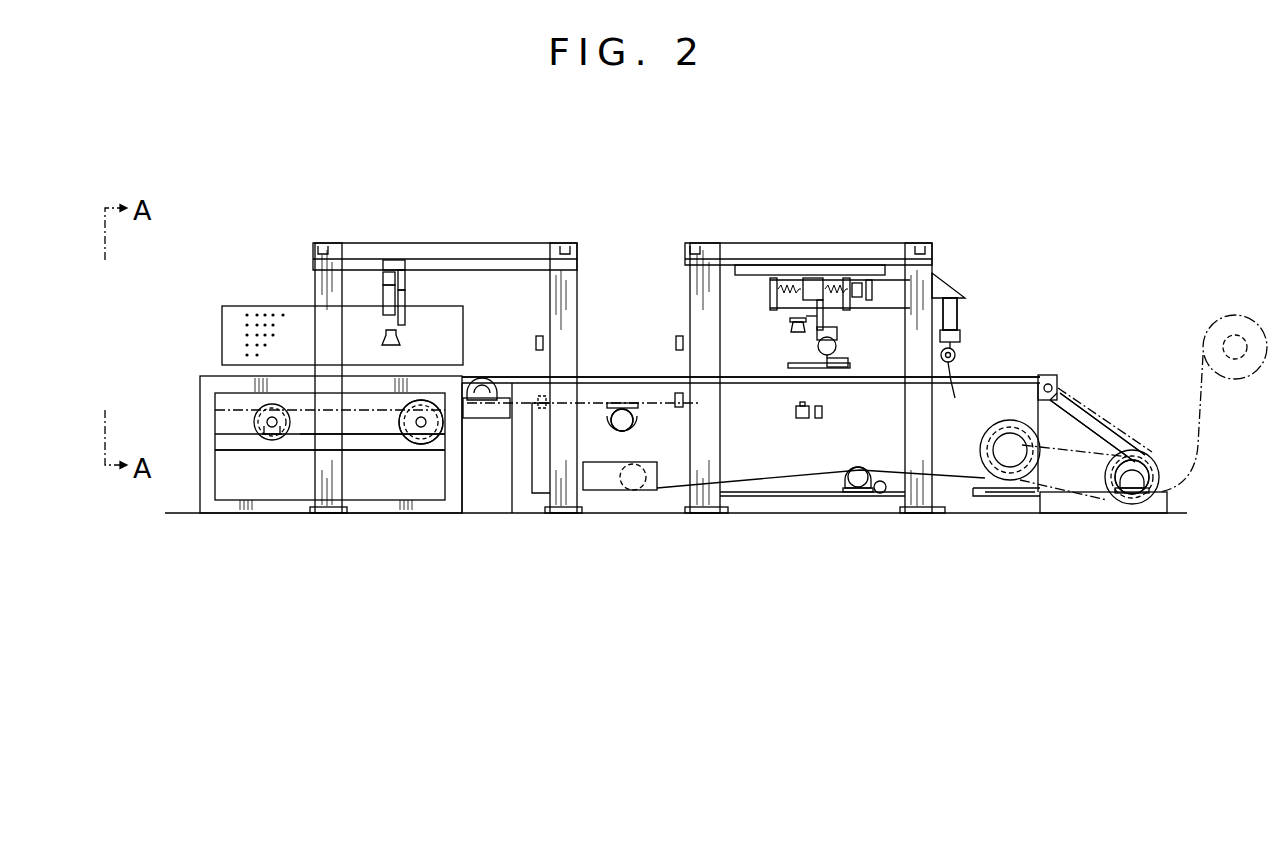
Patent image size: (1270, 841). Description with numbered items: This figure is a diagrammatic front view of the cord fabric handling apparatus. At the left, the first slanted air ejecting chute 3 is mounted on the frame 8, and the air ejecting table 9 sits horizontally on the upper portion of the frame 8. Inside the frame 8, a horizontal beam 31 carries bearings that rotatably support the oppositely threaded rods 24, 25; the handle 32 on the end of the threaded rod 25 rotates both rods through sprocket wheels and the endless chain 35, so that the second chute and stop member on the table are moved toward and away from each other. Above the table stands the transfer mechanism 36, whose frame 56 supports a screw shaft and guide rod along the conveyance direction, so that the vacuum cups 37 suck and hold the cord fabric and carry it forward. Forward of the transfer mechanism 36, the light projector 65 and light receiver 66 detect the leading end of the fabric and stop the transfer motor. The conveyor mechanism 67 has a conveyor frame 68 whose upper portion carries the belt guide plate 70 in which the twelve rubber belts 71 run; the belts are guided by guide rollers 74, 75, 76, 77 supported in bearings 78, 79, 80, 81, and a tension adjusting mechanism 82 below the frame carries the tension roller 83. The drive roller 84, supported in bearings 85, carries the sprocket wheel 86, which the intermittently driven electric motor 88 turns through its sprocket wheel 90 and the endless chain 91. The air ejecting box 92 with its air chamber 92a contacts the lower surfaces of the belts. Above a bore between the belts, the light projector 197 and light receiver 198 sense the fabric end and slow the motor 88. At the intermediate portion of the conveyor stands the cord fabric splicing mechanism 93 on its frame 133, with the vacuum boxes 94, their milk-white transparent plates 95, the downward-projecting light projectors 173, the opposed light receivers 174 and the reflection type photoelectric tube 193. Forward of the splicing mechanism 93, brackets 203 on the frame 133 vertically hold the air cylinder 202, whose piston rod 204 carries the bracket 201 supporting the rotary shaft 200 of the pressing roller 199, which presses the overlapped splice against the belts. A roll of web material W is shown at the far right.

The first slanted air ejecting chute 3 is at (220, 316).
The air ejecting table 9 is at (210, 374).
The frame 8 is at (205, 413).
The threaded rod 24 is at (266, 418).
The threaded rod 25 is at (416, 422).
The horizontal beam 31 is at (249, 444).
The endless chain 35 is at (388, 437).
The handle 32 is at (422, 445).
The frame 56 is at (322, 487).
The transfer mechanism 36 is at (450, 243).
The vacuum cups 37 is at (405, 340).
The light projector 65 is at (539, 335).
The belt guide plate 70 is at (647, 376).
The conveyor mechanism 67 is at (608, 376).
The guide roller 74 is at (483, 378).
The bearing 78 is at (478, 420).
The light receiver 66 is at (533, 455).
The light projector 197 is at (679, 335).
The light receiver 198 is at (677, 410).
The guide roller 75 is at (636, 414).
The bearing 79 is at (614, 416).
The tension adjusting mechanism 82 is at (607, 468).
The tension roller 83 is at (633, 482).
The rubber belts 71 is at (790, 477).
The conveyor frame 68 is at (768, 500).
The cord fabric splicing mechanism 93 is at (832, 243).
The frame 133 is at (932, 265).
The light projectors 173 is at (796, 324).
The vacuum boxes 94 is at (850, 364).
The milk-white transparent plate 95 is at (790, 365).
The bracket 203 is at (956, 292).
The air cylinder 202 is at (958, 315).
The piston rod 204 is at (961, 337).
The bracket 201 is at (943, 342).
The pressing roller 199 is at (956, 355).
The rotary shaft 200 is at (958, 393).
The light receivers 174 is at (802, 420).
The reflection type photoelectric tube 193 is at (823, 412).
The guide roller 76 is at (860, 465).
The bearing 80 is at (882, 491).
The intermittently driven electric motor 88 is at (985, 460).
The sprocket wheel 90 is at (1010, 470).
The endless chain 91 is at (1045, 478).
The bearing 81 is at (1046, 374).
The guide roller 77 is at (1060, 392).
The air ejecting box 92 is at (1088, 402).
The air chamber 92a is at (1100, 420).
The sprocket wheel 86 is at (1148, 466).
The drive roller 84 is at (1160, 482).
The bearings 85 is at (1133, 493).
The web roll W is at (1253, 376).